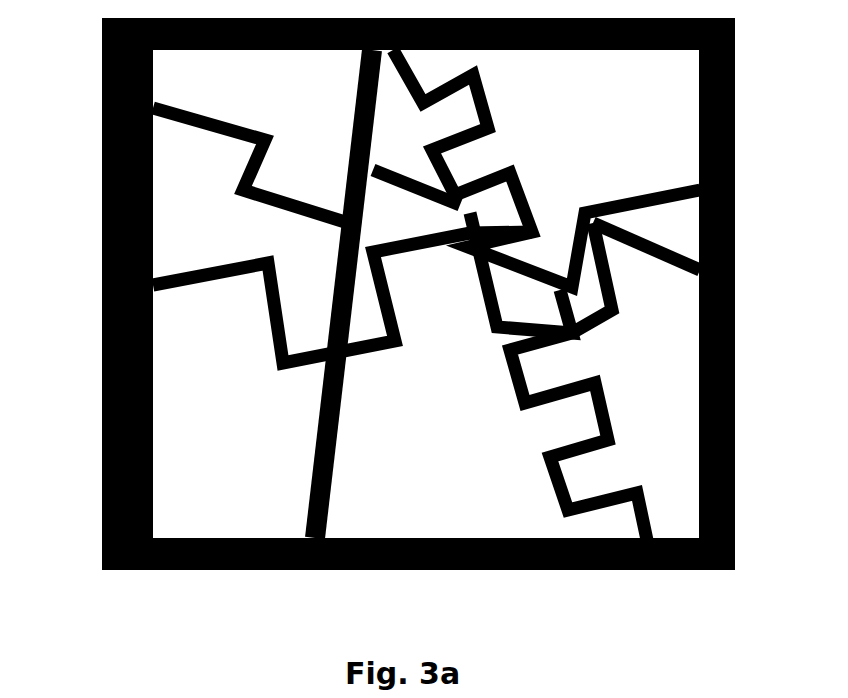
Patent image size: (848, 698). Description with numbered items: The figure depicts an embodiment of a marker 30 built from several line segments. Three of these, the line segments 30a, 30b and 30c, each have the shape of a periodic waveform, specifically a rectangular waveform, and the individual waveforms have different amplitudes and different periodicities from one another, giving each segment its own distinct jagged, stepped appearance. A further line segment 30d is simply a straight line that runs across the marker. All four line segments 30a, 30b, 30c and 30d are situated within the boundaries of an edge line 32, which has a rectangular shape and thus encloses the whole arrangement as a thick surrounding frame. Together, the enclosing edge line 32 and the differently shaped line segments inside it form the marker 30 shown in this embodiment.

The marker 30 is at (415, 349).
The line segment 30a is at (210, 288).
The line segment 30b is at (198, 130).
The line segment 30c is at (560, 500).
The line segment 30d is at (311, 490).
The edge line 32 is at (738, 356).